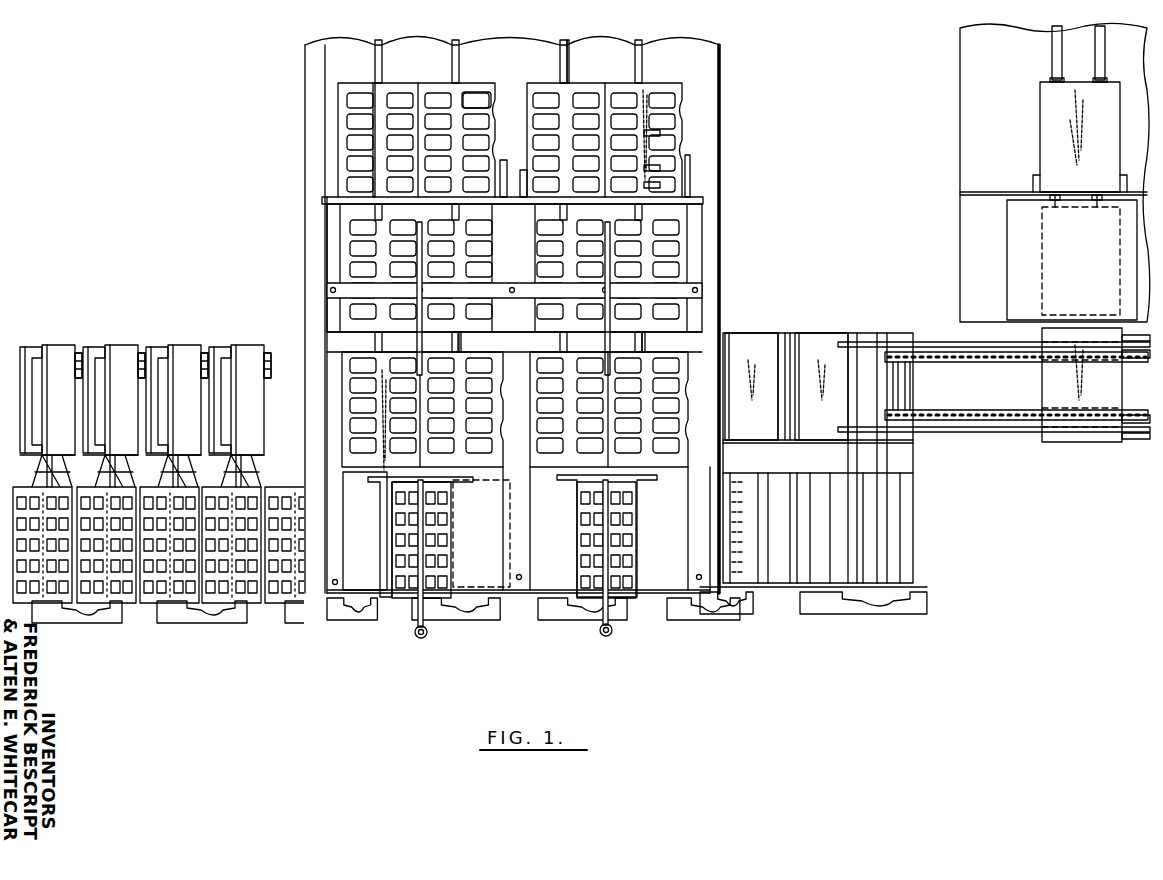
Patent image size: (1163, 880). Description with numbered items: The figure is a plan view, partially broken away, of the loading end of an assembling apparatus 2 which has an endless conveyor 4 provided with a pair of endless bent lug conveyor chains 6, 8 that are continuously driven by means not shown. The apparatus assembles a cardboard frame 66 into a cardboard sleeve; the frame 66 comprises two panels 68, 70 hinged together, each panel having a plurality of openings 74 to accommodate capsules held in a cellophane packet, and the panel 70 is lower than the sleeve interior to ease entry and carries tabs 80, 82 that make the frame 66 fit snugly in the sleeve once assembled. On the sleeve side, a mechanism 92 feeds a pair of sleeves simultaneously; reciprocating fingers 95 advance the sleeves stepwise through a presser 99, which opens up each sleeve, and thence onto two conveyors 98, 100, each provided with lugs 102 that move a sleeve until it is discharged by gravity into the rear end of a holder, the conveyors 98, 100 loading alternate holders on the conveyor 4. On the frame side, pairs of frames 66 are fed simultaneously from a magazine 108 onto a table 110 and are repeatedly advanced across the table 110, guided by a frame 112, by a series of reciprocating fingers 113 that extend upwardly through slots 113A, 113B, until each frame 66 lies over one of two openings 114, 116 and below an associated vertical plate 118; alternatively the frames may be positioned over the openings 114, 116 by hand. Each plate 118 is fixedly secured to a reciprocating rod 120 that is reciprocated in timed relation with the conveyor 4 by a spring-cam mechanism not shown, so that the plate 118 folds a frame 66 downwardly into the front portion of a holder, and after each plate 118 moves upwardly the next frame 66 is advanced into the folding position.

The assembling apparatus 2 is at (80, 298).
The endless conveyor 4 is at (838, 642).
The bent lug conveyor chain 6 is at (137, 595).
The bent lug conveyor chain 8 is at (205, 352).
The frame 66 is at (330, 113).
The panel 68 is at (553, 80).
The panel 70 is at (653, 80).
The openings 74 is at (470, 93).
The tab 80 is at (690, 171).
The tab 82 is at (683, 104).
The sleeve feeding mechanism 92 is at (940, 83).
The reciprocating fingers 95 is at (1097, 70).
The conveyor 98 is at (955, 333).
The presser 99 is at (1015, 222).
The conveyor 100 is at (1142, 437).
The lugs 102 is at (945, 363).
The magazine 108 is at (727, 77).
The table 110 is at (315, 168).
The guide frame 112 is at (340, 268).
The reciprocating fingers 113 is at (383, 78).
The slot 113A is at (377, 47).
The slot 113B is at (567, 43).
The opening 114 is at (392, 545).
The opening 116 is at (637, 545).
The vertical plate 118 is at (426, 608).
The reciprocating rod 120 is at (414, 636).